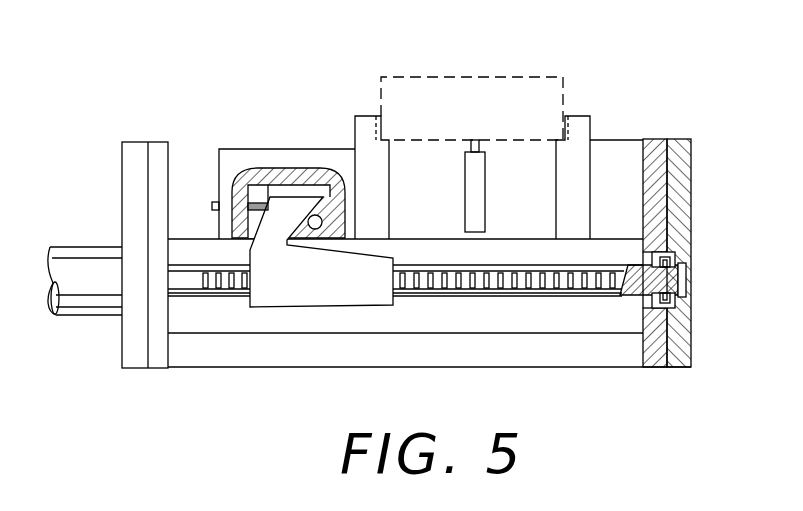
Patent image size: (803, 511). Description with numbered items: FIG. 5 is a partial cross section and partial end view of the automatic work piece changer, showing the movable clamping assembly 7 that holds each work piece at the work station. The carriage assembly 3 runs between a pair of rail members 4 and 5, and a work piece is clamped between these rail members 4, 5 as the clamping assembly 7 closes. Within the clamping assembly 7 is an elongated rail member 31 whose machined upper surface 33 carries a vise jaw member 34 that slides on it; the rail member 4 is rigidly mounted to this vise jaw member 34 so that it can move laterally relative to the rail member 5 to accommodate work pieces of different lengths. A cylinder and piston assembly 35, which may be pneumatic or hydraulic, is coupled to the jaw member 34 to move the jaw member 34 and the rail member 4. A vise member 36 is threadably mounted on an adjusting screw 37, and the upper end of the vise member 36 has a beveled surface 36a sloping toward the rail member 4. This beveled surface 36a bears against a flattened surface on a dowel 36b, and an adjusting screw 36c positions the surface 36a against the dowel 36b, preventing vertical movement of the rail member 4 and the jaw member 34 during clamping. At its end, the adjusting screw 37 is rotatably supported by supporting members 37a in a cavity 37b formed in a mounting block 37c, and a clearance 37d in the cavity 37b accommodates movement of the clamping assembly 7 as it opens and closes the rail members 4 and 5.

The carriage assembly 3 is at (491, 209).
The rail member 4 is at (366, 128).
The rail member 5 is at (580, 128).
The movable clamping assembly 7 is at (378, 54).
The elongated rail member 31 is at (207, 312).
The machined upper surface 33 is at (183, 222).
The vise jaw member 34 is at (310, 148).
The cylinder and piston assembly 35 is at (87, 279).
The vise member 36 is at (305, 296).
The beveled surface 36a is at (285, 222).
The dowel 36b is at (320, 229).
The adjusting screw 36c is at (258, 183).
The adjusting screw 37 is at (438, 289).
The supporting members 37a is at (675, 308).
The cavity 37b is at (672, 251).
The mounting block 37c is at (684, 191).
The clearance 37d is at (687, 280).